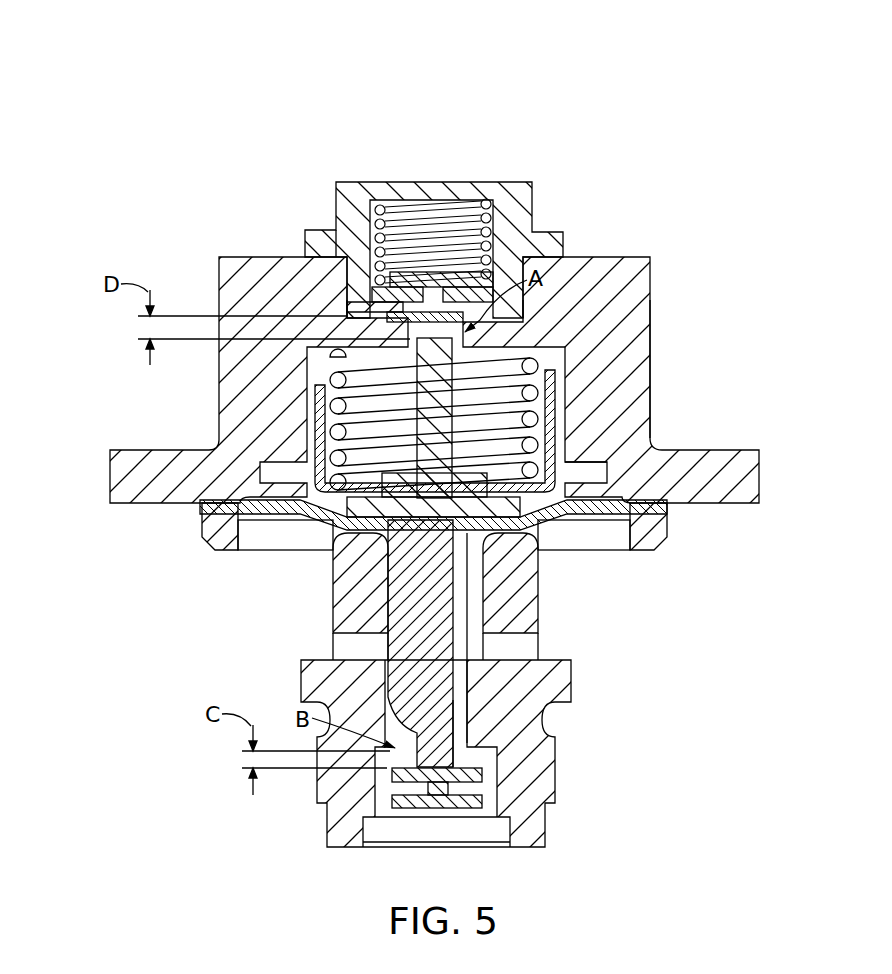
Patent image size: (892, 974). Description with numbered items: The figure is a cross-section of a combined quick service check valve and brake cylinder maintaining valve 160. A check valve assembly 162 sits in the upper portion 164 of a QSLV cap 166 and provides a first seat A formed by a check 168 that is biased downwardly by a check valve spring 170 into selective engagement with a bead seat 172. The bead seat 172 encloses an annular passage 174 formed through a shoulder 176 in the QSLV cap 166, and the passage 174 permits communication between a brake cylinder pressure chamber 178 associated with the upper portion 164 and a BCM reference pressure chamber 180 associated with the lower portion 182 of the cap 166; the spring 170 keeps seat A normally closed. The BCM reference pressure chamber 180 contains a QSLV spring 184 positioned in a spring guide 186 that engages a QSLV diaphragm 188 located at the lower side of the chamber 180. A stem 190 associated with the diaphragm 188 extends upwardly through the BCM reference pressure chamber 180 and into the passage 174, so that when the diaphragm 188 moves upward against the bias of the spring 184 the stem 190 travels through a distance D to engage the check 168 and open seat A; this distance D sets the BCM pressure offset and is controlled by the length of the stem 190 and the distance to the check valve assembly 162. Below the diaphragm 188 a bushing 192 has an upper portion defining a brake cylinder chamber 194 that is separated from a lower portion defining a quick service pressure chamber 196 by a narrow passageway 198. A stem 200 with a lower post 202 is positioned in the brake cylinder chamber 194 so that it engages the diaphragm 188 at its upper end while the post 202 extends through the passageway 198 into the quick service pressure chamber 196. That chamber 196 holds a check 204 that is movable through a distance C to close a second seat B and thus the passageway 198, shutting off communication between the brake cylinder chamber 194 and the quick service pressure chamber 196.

The combined quick service check valve and brake cylinder maintaining valve 160 is at (446, 98).
The check valve assembly 162 is at (500, 224).
The upper portion 164 is at (336, 210).
The QSLV cap 166 is at (255, 257).
The check 168 is at (448, 330).
The check valve spring 170 is at (380, 205).
The bead seat 172 is at (400, 294).
The annular passage 174 is at (455, 318).
The shoulder 176 is at (427, 344).
The brake cylinder pressure chamber 178 is at (500, 318).
The BCM reference pressure chamber 180 is at (575, 447).
The lower portion 182 is at (652, 382).
The QSLV spring 184 is at (666, 528).
The spring guide 186 is at (560, 490).
The QSLV diaphragm 188 is at (203, 515).
The stem 190 is at (340, 406).
The bushing 192 is at (573, 682).
The brake cylinder chamber 194 is at (472, 600).
The quick service pressure chamber 196 is at (485, 797).
The narrow passageway 198 is at (520, 658).
The stem 200 is at (408, 597).
The lower post 202 is at (462, 728).
The check 204 is at (500, 815).